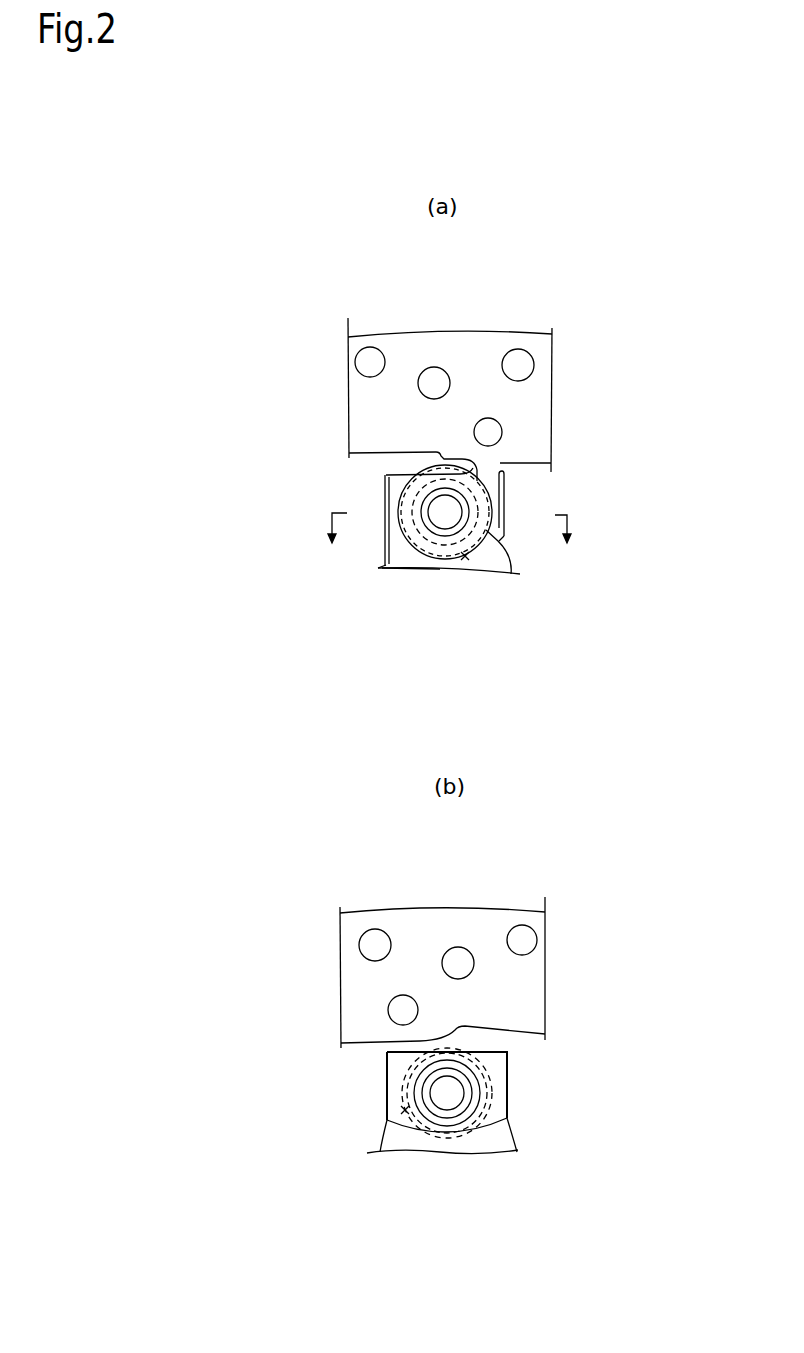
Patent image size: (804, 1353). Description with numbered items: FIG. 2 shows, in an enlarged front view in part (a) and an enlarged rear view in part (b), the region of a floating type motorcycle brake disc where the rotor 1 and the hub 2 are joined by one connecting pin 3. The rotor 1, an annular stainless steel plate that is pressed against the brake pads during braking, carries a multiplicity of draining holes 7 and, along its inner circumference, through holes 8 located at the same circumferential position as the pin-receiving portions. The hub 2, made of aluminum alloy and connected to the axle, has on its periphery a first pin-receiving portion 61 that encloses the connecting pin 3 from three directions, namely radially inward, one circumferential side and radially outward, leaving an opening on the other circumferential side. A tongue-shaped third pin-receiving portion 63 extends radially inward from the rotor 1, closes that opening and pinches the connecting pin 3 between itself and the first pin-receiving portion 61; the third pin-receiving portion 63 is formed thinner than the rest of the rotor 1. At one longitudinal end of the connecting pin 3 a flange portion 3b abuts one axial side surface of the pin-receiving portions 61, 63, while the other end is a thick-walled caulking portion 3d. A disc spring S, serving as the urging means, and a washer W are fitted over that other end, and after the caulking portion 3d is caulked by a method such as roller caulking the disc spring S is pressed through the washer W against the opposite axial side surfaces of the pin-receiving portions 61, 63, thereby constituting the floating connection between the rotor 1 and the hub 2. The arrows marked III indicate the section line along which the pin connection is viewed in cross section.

The rotor 1 is at (392, 340).
The hub 2 is at (447, 556).
The connecting pin 3 is at (468, 552).
The flange portion 3b is at (423, 538).
The caulking portion 3d is at (490, 1148).
The first pin-receiving portion 61 is at (578, 1060).
The third pin-receiving portion 63 is at (505, 492).
The draining holes 7 is at (435, 372).
The through holes 8 is at (495, 432).
The washer W is at (385, 477).
The disc spring S is at (495, 525).
The section line III is at (325, 553).